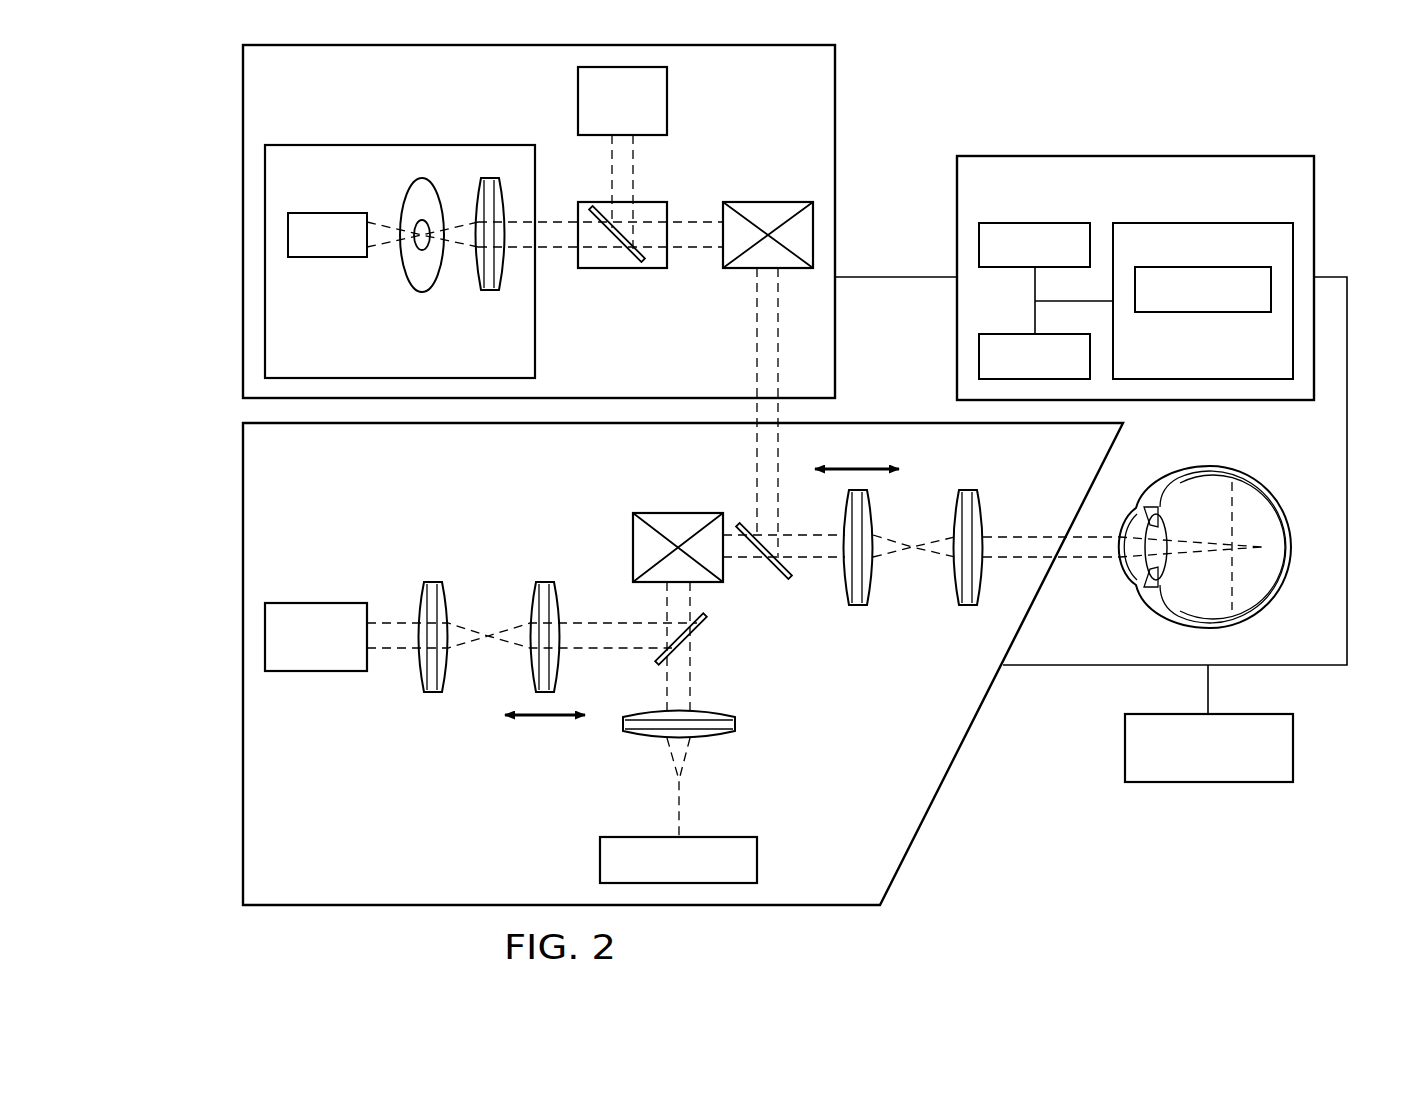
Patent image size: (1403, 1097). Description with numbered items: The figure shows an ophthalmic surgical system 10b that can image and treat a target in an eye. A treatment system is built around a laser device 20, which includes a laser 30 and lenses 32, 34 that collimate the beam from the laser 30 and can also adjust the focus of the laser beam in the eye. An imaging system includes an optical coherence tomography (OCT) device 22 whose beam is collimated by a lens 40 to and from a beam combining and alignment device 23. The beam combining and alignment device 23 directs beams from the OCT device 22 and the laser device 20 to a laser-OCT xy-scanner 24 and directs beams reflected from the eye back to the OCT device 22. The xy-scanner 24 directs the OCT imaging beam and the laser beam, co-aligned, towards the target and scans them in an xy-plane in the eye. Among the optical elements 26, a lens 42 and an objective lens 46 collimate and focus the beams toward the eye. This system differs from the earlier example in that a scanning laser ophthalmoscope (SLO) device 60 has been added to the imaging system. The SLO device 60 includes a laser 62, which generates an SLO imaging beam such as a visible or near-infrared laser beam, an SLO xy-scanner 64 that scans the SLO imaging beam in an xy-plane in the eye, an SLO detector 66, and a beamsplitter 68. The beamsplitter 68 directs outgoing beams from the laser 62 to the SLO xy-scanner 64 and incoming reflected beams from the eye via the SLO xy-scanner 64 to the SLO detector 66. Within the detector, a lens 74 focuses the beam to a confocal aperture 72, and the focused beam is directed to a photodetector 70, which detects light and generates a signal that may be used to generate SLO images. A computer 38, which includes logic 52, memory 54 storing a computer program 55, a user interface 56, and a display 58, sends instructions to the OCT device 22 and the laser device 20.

The ophthalmic surgical system 10b is at (216, 782).
The laser device 20 is at (383, 551).
The optical coherence tomography (OCT) device 22 is at (641, 837).
The beam combining and alignment device 23 is at (703, 637).
The laser-OCT xy-scanner 24 is at (633, 540).
The optical elements 26 is at (876, 664).
The laser 30 is at (315, 603).
The lens 32 is at (435, 692).
The lens 34 is at (531, 593).
The computer 38 is at (1316, 233).
The lens 40 is at (718, 738).
The lens 42 is at (870, 593).
The objective lens 46 is at (985, 515).
The logic 52 is at (1023, 223).
The memory 54 is at (1226, 223).
The computer program 55 is at (1207, 312).
The user interface 56 is at (1012, 334).
The display 58 is at (1293, 748).
The scanning laser ophthalmoscope (SLO) device 60 is at (241, 132).
The laser 62 is at (578, 100).
The SLO xy-scanner 64 is at (768, 202).
The SLO detector 66 is at (376, 142).
The beamsplitter 68 is at (622, 268).
The photodetector 70 is at (323, 213).
The confocal aperture 72 is at (422, 290).
The lens 74 is at (489, 292).